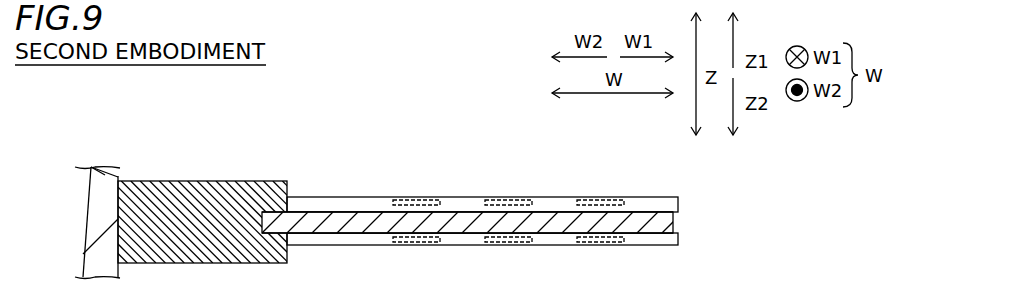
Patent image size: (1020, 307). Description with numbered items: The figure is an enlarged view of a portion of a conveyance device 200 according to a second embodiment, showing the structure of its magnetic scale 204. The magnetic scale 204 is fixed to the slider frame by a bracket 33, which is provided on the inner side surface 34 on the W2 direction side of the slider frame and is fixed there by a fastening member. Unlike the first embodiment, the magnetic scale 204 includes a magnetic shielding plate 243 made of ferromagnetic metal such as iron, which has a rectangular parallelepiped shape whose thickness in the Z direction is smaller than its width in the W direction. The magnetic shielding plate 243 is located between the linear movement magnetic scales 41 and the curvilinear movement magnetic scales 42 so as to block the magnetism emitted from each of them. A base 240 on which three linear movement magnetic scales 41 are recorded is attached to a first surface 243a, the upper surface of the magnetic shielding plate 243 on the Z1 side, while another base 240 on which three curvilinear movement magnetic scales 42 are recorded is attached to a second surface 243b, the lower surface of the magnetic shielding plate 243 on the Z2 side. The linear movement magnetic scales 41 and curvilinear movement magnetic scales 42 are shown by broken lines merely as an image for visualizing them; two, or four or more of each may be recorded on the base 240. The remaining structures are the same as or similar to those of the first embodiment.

The conveyance device 200 is at (150, 143).
The bracket 33 is at (181, 181).
The inner side surface 34 is at (116, 174).
The magnetic scale 204 is at (328, 194).
The base 240 is at (665, 197).
The magnetic shielding plate 243 is at (305, 236).
The first surface 243a is at (360, 211).
The second surface 243b is at (352, 234).
The linear movement magnetic scale 41 is at (432, 201).
The curvilinear movement magnetic scale 42 is at (427, 244).